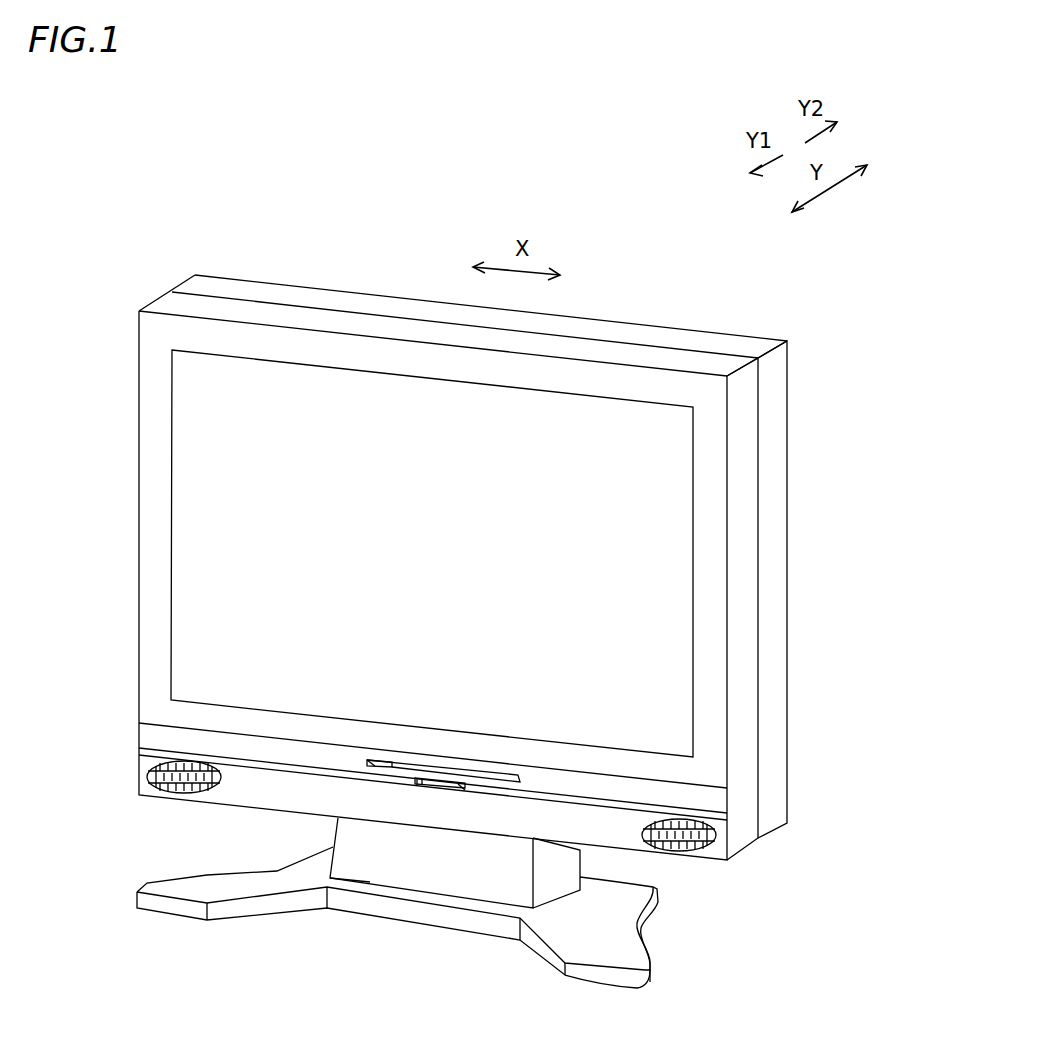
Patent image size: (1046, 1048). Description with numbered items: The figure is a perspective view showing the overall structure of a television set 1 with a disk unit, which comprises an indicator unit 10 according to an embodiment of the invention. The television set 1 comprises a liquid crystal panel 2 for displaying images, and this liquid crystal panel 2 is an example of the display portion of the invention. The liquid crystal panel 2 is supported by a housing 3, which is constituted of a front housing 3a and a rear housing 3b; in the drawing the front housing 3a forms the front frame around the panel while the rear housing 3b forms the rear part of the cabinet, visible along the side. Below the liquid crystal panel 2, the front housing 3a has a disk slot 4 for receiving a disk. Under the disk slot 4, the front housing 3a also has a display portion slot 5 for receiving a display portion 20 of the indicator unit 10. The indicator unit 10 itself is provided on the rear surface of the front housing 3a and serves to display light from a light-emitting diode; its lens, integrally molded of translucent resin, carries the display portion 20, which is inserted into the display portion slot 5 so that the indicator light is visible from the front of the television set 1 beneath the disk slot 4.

The television set 1 is at (672, 272).
The liquid crystal panel 2 is at (220, 497).
The housing 3 is at (808, 285).
The front housing 3a is at (741, 387).
The rear housing 3b is at (780, 382).
The disk slot 4 is at (385, 768).
The display portion slot 5 is at (421, 785).
The indicator unit 10 is at (437, 793).
The display portion 20 is at (463, 787).